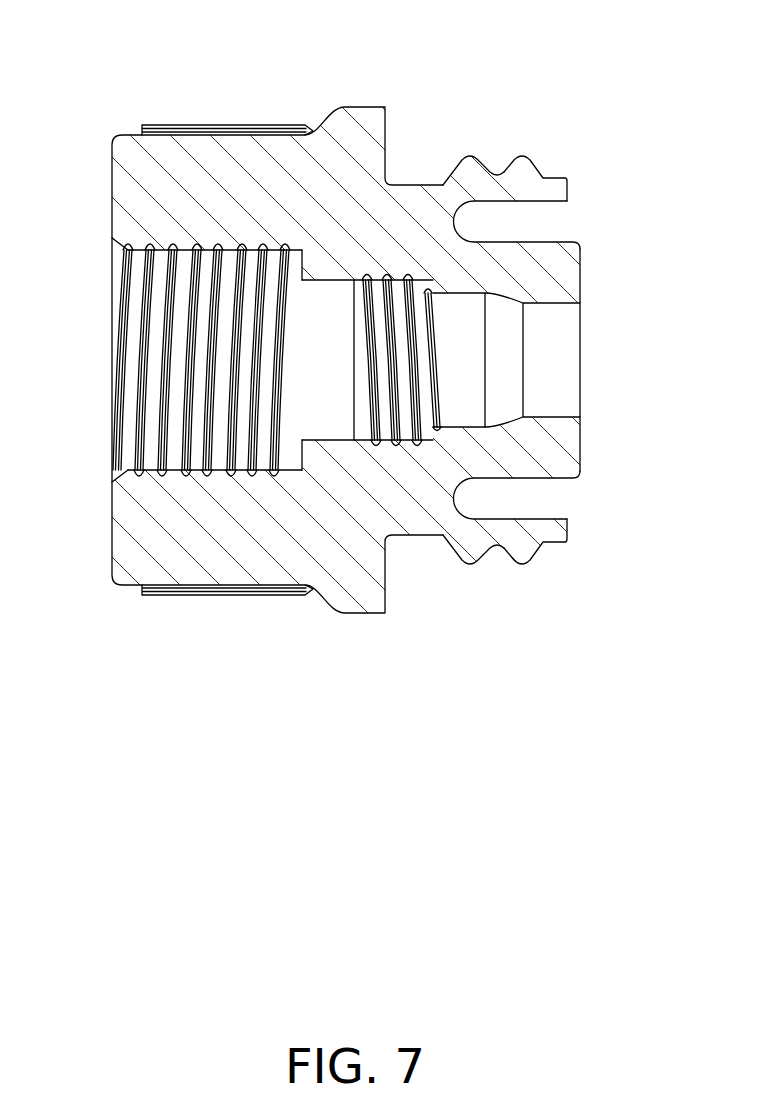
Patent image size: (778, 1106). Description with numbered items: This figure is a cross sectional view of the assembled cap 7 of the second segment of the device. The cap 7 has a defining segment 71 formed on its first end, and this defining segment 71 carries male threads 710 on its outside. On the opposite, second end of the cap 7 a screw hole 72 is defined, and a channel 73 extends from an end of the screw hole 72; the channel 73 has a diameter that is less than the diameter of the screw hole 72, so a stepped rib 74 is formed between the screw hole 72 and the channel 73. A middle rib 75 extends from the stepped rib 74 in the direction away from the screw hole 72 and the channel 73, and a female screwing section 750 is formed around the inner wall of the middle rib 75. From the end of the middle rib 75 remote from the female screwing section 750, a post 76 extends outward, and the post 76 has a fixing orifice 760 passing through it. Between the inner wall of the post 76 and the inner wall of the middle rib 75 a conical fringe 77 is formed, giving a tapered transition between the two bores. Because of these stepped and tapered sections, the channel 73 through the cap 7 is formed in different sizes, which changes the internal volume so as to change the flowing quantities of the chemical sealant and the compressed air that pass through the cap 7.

The cap 7 is at (127, 182).
The defining segment 71 is at (552, 192).
The male threads 710 is at (485, 160).
The screw hole 72 is at (135, 330).
The channel 73 is at (333, 317).
The stepped rib 74 is at (320, 273).
The middle rib 75 is at (375, 275).
The female screwing section 750 is at (400, 287).
The post 76 is at (572, 292).
The fixing orifice 760 is at (572, 348).
The conical fringe 77 is at (503, 421).